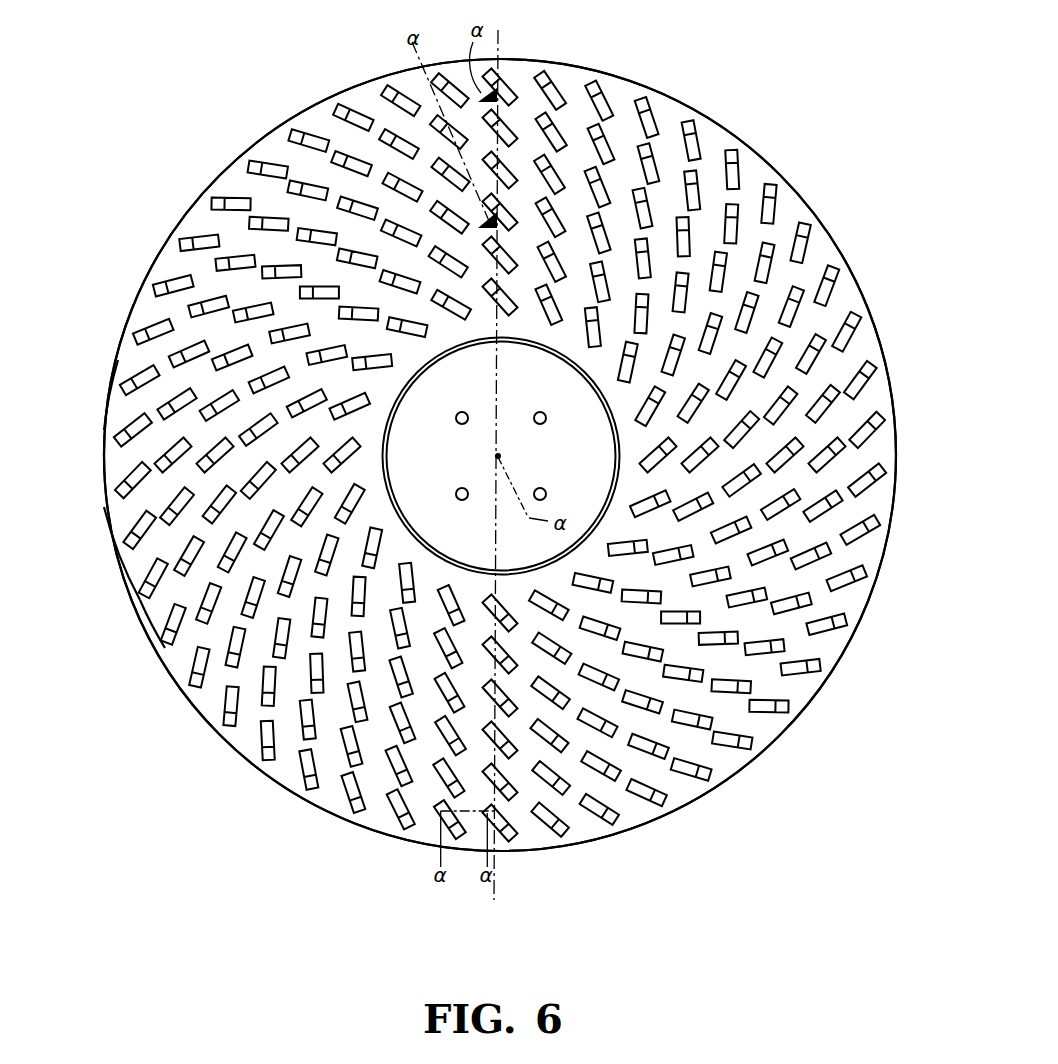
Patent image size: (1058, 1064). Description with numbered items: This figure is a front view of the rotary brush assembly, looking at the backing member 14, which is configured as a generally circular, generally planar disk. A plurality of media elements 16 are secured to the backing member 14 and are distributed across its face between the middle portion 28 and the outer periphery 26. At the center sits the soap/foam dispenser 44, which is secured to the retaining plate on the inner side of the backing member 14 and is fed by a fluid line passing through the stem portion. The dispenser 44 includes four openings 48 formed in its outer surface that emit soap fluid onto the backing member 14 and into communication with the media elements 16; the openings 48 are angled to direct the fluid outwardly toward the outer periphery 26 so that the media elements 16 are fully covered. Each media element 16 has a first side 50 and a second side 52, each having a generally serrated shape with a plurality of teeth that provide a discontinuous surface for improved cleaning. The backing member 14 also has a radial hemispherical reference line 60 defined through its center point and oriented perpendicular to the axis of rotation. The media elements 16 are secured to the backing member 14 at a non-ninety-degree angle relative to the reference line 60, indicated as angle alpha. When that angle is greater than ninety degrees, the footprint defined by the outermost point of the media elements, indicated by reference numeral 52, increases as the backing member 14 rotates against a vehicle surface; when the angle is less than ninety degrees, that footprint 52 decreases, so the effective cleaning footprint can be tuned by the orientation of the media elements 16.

The backing member 14 is at (897, 448).
The media elements 16 is at (843, 583).
The outer periphery 26 is at (236, 167).
The middle portion 28 is at (607, 373).
The soap/foam dispenser 44 is at (420, 396).
The openings 48 is at (461, 486).
The first side 50 is at (128, 553).
The second side 52 is at (138, 367).
The radial hemispherical reference line 60 is at (497, 868).